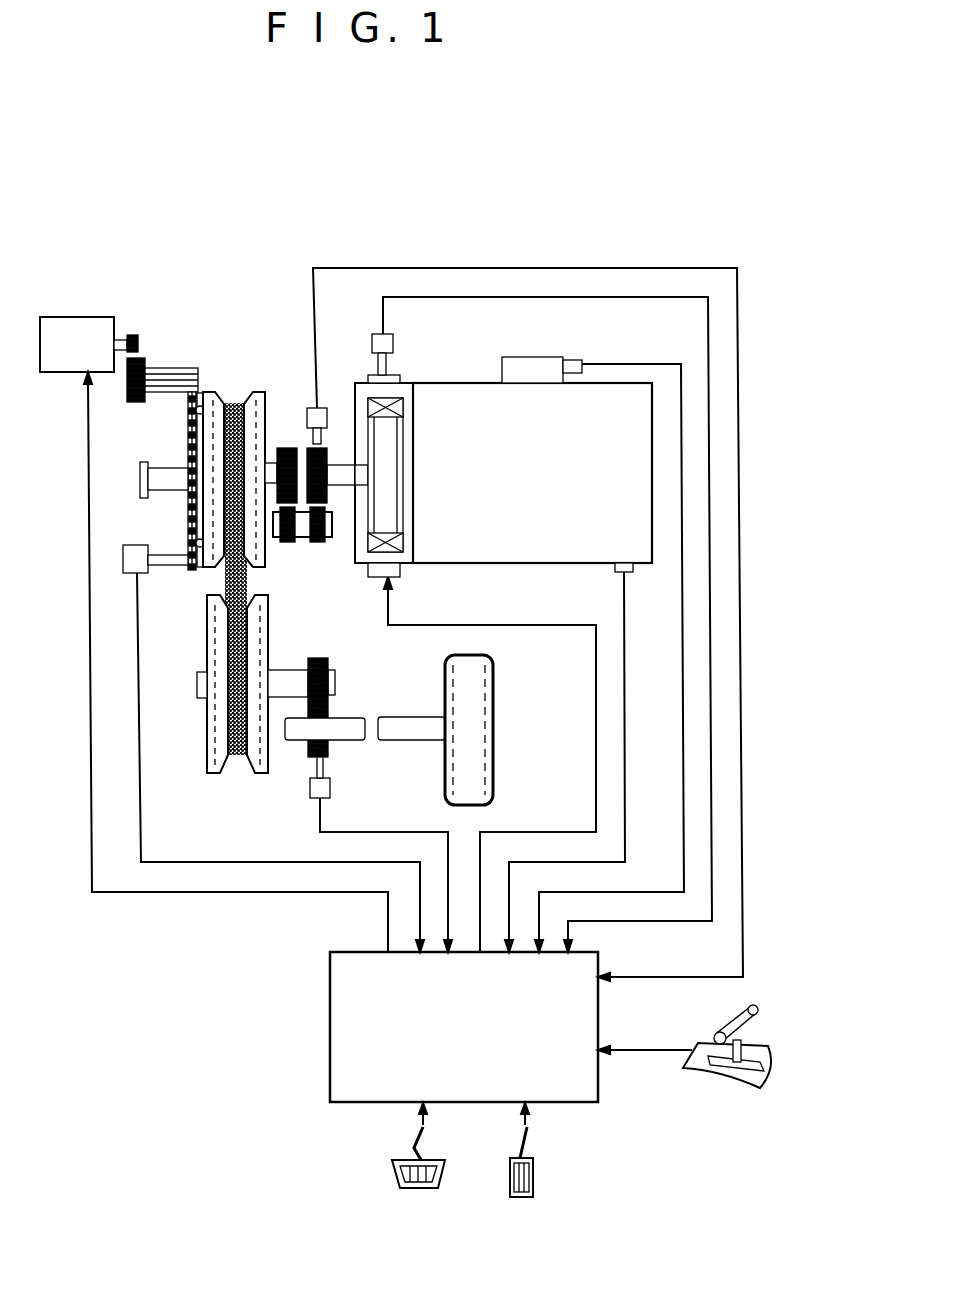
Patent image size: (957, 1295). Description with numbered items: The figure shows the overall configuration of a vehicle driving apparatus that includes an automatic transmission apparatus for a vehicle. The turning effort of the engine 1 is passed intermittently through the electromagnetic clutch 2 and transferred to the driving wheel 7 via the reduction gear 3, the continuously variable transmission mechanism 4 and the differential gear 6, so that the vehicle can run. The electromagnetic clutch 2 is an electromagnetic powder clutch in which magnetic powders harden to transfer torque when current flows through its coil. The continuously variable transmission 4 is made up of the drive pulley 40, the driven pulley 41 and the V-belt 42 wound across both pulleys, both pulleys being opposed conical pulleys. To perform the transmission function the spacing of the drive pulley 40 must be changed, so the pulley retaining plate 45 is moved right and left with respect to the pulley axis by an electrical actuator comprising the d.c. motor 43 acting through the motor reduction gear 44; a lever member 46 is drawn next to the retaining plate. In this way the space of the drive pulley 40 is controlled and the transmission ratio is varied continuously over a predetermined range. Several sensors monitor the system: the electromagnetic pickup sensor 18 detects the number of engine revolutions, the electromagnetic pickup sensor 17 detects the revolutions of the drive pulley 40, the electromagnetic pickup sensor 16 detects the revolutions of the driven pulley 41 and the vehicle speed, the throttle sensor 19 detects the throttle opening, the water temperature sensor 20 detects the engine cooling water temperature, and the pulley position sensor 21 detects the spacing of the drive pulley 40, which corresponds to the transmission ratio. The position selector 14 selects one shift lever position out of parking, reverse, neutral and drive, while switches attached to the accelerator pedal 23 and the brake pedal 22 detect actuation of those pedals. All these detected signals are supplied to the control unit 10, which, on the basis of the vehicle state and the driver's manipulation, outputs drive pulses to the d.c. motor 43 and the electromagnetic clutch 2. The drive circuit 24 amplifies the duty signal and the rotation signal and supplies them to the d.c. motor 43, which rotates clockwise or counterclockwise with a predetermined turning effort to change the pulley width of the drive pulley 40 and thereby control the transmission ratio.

The engine 1 is at (482, 552).
The electromagnetic clutch 2 is at (415, 476).
The reduction gear 3 is at (306, 545).
The continuously variable transmission mechanism 4 is at (253, 451).
The differential gear 6 is at (332, 680).
The driving wheel 7 is at (495, 772).
The control unit 10 is at (330, 990).
The position selector 14 is at (705, 1070).
The electromagnetic pickup sensor 16 is at (312, 790).
The electromagnetic pickup sensor 17 is at (319, 405).
The electromagnetic pickup sensor 18 is at (393, 345).
The throttle sensor 19 is at (535, 357).
The water temperature sensor 20 is at (615, 575).
The pulley position sensor 21 is at (130, 545).
The brake pedal 22 is at (392, 1175).
The accelerator pedal 23 is at (534, 1175).
The drive circuit 24 is at (400, 405).
The drive pulley 40 is at (262, 402).
The driven pulley 41 is at (207, 652).
The V-belt 42 is at (230, 580).
The d.c. motor 43 is at (90, 317).
The motor reduction gear 44 is at (177, 366).
The pulley retaining plate 45 is at (188, 432).
The shift lever arm 46 is at (143, 464).